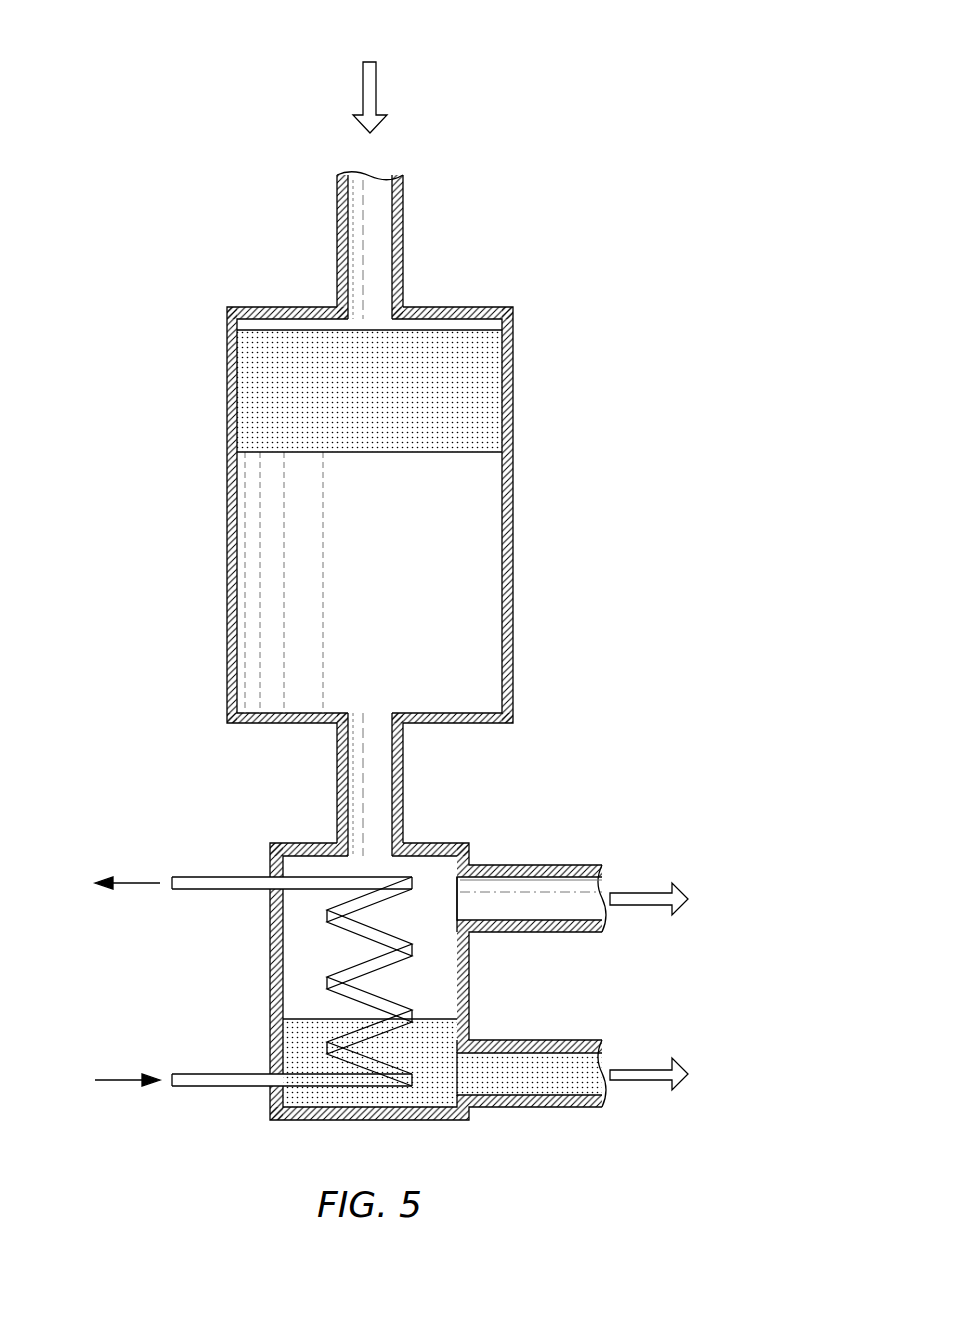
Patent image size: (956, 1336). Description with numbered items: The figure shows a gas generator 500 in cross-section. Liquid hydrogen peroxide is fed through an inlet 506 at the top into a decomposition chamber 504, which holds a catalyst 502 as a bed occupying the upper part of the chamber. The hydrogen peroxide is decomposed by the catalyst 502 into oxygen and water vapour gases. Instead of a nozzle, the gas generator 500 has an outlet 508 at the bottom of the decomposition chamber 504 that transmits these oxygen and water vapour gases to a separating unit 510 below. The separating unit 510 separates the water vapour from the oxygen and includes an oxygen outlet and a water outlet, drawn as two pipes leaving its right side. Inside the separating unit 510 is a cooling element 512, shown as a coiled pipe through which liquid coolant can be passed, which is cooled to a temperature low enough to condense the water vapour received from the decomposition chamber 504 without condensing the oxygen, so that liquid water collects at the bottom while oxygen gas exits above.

The gas generator 500 is at (439, 564).
The catalyst 502 is at (405, 452).
The decomposition chamber 504 is at (227, 514).
The inlet 506 is at (337, 274).
The outlet 508 is at (337, 779).
The separating unit 510 is at (470, 984).
The cooling element 512 is at (327, 977).